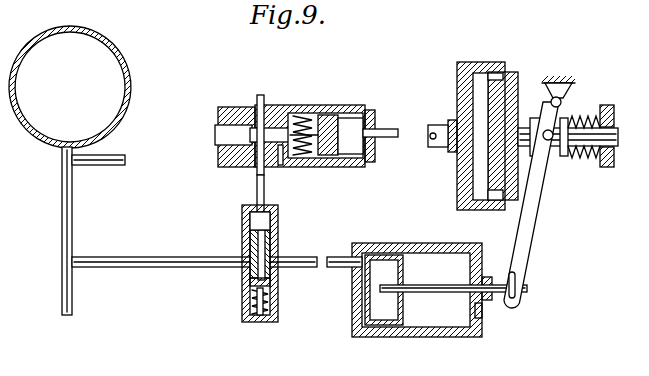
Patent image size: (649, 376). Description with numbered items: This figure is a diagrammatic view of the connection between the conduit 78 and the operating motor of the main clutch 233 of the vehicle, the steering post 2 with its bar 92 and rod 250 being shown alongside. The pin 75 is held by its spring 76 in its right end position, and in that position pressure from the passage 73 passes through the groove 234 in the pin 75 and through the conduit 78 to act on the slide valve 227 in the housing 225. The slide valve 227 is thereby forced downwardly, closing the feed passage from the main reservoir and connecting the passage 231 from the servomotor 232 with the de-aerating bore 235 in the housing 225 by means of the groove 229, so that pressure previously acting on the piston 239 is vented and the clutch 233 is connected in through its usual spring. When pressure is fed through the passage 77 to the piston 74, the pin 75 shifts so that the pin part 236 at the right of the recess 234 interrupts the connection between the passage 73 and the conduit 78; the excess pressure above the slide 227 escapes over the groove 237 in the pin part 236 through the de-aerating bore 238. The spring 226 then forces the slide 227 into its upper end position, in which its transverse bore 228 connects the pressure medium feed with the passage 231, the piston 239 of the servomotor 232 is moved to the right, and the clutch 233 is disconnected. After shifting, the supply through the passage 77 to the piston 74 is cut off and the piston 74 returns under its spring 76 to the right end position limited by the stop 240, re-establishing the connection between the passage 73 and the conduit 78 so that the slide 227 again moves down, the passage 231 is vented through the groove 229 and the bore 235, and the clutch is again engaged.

The steering post 2 is at (71, 293).
The bar 92 is at (100, 164).
The rod 250 is at (155, 266).
The stop 240 is at (355, 161).
The groove 234 is at (236, 163).
The pin 75 is at (222, 127).
The pin part 236 is at (268, 142).
The groove 237 is at (308, 160).
The de-aerating bore 238 is at (281, 166).
The passage 73 is at (259, 106).
The spring 76 is at (303, 116).
The piston 74 is at (326, 115).
The passage 77 is at (386, 130).
The conduit 78 is at (256, 189).
The housing 225 is at (250, 220).
The slide valve 227 is at (247, 250).
The groove 229 is at (268, 257).
The de-aerating bore 235 is at (270, 243).
The transverse bore 228 is at (272, 282).
The spring 226 is at (251, 300).
The servomotor 232 is at (431, 337).
The conduit 231 is at (337, 260).
The piston 239 is at (398, 300).
The clutch 233 is at (512, 76).